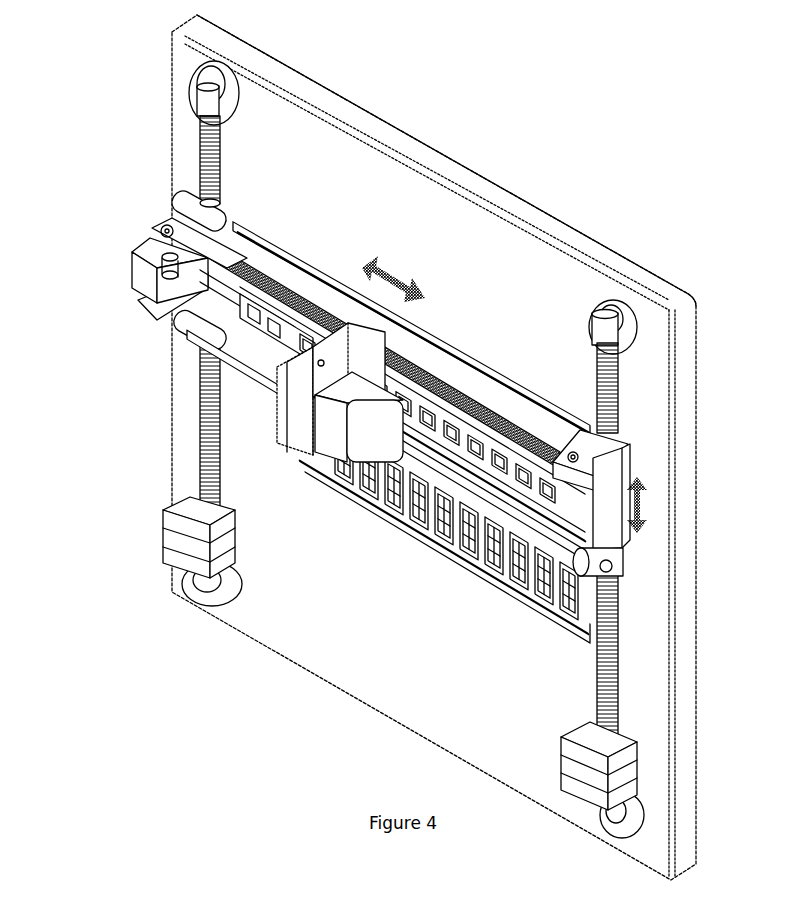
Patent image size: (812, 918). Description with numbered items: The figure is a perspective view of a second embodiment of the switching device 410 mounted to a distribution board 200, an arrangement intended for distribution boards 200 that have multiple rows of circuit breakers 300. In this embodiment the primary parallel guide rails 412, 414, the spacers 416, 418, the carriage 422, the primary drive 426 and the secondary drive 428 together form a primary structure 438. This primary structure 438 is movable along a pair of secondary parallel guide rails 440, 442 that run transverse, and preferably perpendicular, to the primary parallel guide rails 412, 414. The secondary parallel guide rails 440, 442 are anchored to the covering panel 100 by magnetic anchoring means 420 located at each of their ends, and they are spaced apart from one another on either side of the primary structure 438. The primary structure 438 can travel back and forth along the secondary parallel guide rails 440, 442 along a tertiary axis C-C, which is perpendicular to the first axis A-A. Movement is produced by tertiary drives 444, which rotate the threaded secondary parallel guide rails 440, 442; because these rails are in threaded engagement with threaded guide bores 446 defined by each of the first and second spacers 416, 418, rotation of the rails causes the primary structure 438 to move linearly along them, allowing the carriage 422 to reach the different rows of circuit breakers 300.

The covering panel 100 is at (530, 290).
The distribution board 200 is at (689, 282).
The circuit breakers 300 is at (476, 403).
The switching device 410 is at (135, 98).
The primary parallel guide rail 412 is at (278, 265).
The primary parallel guide rail 414 is at (256, 372).
The spacer 416 is at (208, 316).
The spacer 418 is at (609, 537).
The magnetic anchoring means 420 is at (226, 88).
The carriage 422 is at (340, 350).
The primary drive 426 is at (333, 442).
The secondary drive 428 is at (147, 287).
The primary structure 438 is at (80, 223).
The secondary parallel guide rail 440 is at (200, 442).
The secondary parallel guide rail 442 is at (619, 670).
The tertiary drive 444 is at (174, 542).
The threaded guide bore 446 is at (200, 193).